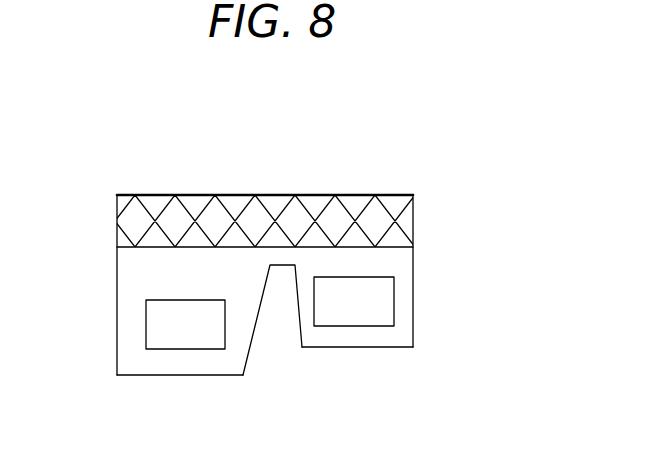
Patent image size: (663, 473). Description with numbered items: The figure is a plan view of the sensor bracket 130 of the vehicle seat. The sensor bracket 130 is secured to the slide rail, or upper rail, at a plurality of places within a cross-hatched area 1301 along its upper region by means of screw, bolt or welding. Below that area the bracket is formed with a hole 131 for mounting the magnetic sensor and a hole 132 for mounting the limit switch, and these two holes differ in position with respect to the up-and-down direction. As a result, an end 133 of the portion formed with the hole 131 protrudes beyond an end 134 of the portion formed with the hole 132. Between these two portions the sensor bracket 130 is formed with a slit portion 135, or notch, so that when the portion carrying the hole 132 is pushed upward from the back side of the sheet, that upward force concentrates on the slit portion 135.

The sensor bracket 130 is at (362, 195).
The cross-hatched area 1301 is at (262, 217).
The hole for mounting the magnetic sensor 131 is at (147, 325).
The hole for mounting the limit switch 132 is at (394, 300).
The end of portion formed with the magnetic sensor hole 133 is at (180, 375).
The end of portion formed with the limit switch hole 134 is at (357, 347).
The slit portion 135 is at (282, 267).